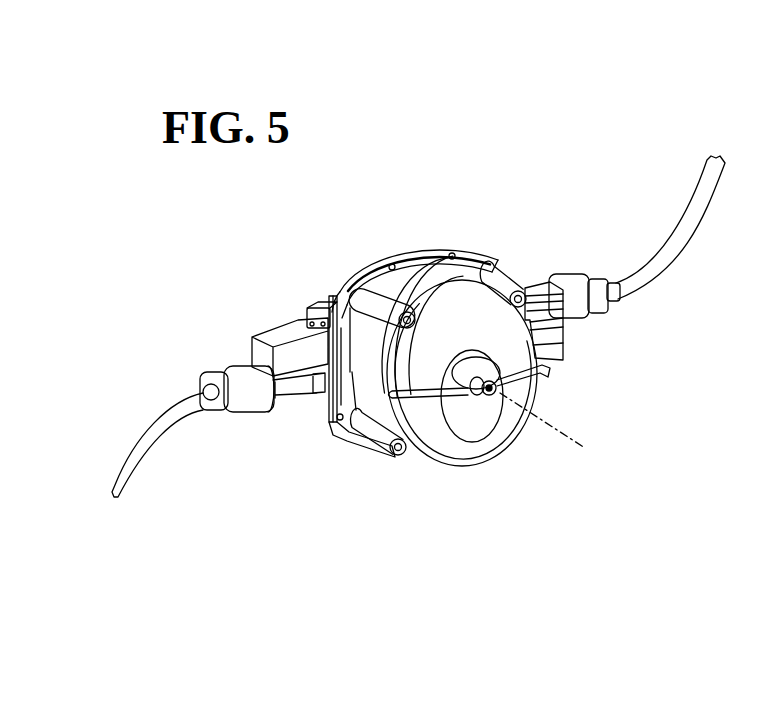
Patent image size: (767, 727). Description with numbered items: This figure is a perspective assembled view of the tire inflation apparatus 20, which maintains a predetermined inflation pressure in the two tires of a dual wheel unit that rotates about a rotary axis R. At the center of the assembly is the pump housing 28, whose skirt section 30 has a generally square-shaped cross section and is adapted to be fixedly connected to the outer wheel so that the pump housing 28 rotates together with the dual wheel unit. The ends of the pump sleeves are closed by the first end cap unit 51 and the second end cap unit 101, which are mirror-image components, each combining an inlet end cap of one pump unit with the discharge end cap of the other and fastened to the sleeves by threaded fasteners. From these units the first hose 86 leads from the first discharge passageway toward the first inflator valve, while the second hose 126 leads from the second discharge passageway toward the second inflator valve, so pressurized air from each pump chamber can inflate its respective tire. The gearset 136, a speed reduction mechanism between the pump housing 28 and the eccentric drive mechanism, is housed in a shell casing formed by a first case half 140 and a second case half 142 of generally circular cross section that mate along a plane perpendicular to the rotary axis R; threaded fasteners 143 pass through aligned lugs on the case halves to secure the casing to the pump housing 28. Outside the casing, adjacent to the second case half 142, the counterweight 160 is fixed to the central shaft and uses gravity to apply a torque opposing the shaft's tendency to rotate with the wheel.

The tire inflation apparatus 20 is at (477, 116).
The pump housing 28 is at (343, 274).
The skirt section 30 is at (407, 253).
The first end cap unit 51 is at (285, 410).
The first hose 86 is at (667, 260).
The second end cap unit 101 is at (542, 278).
The second hose 126 is at (143, 448).
The gearset 136 is at (432, 479).
The first case half 140 is at (430, 247).
The second case half 142 is at (480, 267).
The threaded fasteners 143 is at (400, 462).
The counterweight 160 is at (492, 445).
The rotary axis R is at (549, 432).